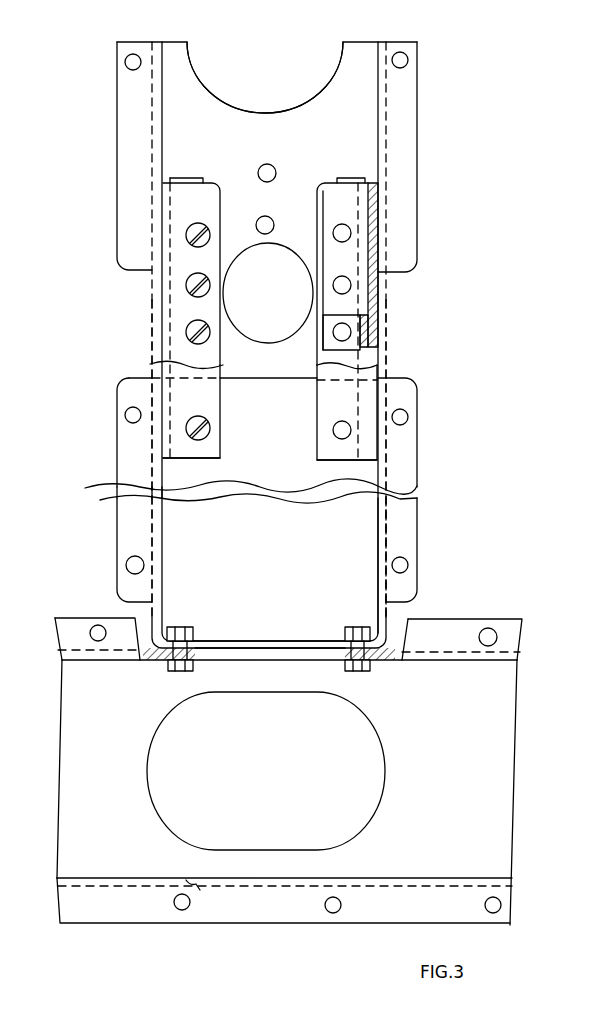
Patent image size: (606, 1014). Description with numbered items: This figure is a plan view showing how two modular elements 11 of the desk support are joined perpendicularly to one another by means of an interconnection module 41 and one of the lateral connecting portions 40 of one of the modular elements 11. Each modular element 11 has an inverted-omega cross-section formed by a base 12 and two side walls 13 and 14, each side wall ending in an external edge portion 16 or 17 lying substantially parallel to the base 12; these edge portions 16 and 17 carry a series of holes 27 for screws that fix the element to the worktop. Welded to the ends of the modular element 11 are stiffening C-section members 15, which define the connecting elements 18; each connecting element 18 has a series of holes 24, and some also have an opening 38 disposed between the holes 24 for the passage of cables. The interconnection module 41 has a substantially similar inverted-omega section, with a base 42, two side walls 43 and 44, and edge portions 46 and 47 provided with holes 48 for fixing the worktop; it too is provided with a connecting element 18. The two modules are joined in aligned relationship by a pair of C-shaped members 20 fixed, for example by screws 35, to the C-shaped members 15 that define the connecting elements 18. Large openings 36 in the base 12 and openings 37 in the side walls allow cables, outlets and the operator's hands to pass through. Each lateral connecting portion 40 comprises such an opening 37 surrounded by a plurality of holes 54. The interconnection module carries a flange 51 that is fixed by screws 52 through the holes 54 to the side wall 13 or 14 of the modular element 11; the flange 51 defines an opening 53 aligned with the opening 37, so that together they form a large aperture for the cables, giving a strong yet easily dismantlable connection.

The modular element 11 is at (128, 287).
The base 12 is at (360, 50).
The side wall 13 is at (152, 128).
The side wall 14 is at (386, 100).
The C-shape section member 15 is at (325, 447).
The edge portion 16 is at (125, 172).
The edge portion 17 is at (410, 138).
The connecting element 18 is at (237, 400).
The C-shaped member 20 is at (193, 179).
The hole 24 is at (336, 283).
The hole 27 is at (127, 67).
The screw 35 is at (203, 278).
The opening 36 is at (208, 78).
The opening 37 is at (345, 656).
The opening 38 is at (275, 340).
The connecting portion 40 is at (152, 678).
The interconnection module 41 is at (414, 372).
The base 42 is at (180, 472).
The side wall 43 is at (380, 470).
The side wall 44 is at (157, 532).
The edge portion 46 is at (407, 533).
The edge portion 47 is at (125, 452).
The hole 48 is at (404, 414).
The flange 51 is at (200, 646).
The screw 52 is at (180, 626).
The opening 53 is at (345, 634).
The hole 54 is at (373, 672).